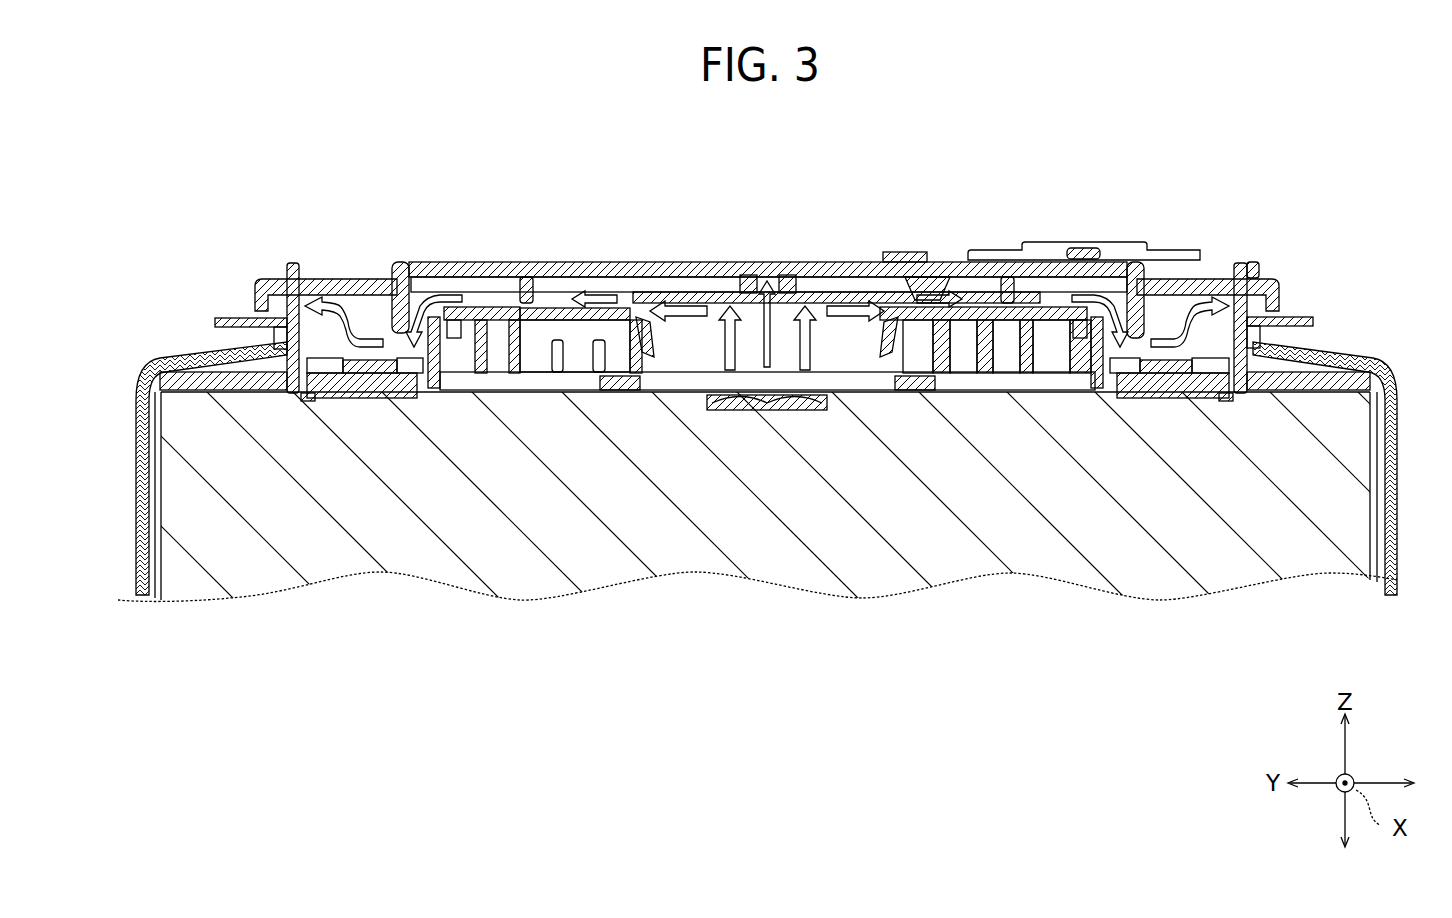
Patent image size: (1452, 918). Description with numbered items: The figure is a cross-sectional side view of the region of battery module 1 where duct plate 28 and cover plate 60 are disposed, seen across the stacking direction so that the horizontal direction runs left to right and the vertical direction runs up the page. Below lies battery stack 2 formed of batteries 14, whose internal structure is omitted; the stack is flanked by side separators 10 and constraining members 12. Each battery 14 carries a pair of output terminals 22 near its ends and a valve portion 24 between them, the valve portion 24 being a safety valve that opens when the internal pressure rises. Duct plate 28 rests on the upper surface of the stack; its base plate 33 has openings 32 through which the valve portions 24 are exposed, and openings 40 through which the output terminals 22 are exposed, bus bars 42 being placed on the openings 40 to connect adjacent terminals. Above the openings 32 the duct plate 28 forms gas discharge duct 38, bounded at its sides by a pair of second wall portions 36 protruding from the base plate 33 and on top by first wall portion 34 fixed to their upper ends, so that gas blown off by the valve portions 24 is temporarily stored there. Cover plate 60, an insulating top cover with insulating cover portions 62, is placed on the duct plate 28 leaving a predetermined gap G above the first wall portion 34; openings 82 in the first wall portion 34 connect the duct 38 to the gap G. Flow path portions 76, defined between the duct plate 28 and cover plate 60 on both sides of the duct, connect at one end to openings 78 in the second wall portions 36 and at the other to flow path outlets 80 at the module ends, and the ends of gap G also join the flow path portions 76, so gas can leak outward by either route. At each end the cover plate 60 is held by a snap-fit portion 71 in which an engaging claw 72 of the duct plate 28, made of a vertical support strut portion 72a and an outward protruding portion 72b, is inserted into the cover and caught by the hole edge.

The battery module 1 is at (780, 740).
The battery stack 2 is at (1352, 595).
The side separator 10 is at (180, 357).
The constraining member 12 is at (140, 592).
The battery 14 is at (1265, 580).
The output terminal 22 is at (362, 400).
The valve portion 24 is at (790, 412).
The duct plate 28 is at (540, 404).
The opening 32 is at (640, 318).
The base plate 33 is at (652, 393).
The first wall portion 34 is at (935, 275).
The second wall portion 36 is at (604, 393).
The gas discharge duct 38 is at (808, 305).
The opening 40 is at (316, 400).
The bus bar 42 is at (322, 395).
The cover plate 60 is at (450, 258).
The insulating cover portion 62 is at (1047, 242).
The snap-fit portion 71 is at (1249, 246).
The engaging claw 72 is at (285, 270).
The support strut portion 72a is at (1285, 312).
The protruding portion 72b is at (1262, 266).
The flow path portion 76 is at (366, 305).
The opening 78 is at (662, 288).
The flow path outlet 80 is at (303, 278).
The opening 82 is at (766, 283).
The gap G is at (718, 260).